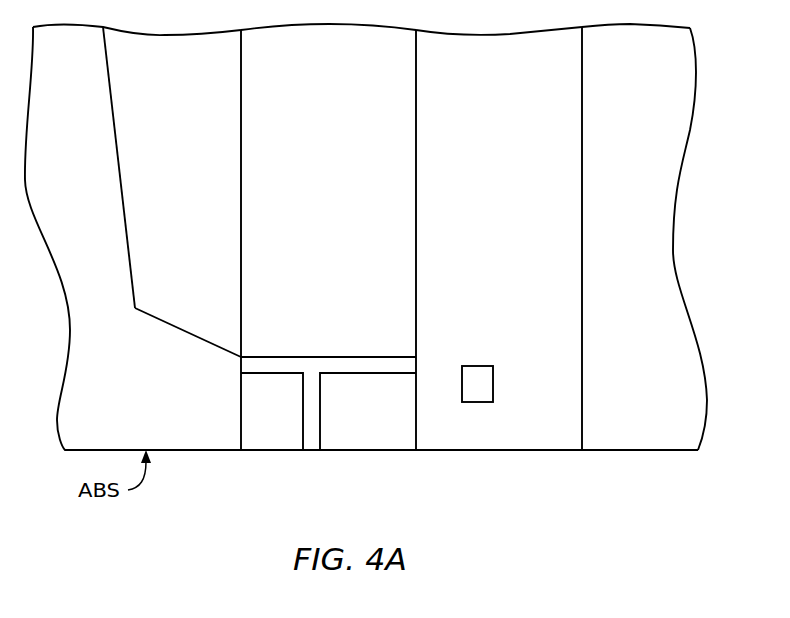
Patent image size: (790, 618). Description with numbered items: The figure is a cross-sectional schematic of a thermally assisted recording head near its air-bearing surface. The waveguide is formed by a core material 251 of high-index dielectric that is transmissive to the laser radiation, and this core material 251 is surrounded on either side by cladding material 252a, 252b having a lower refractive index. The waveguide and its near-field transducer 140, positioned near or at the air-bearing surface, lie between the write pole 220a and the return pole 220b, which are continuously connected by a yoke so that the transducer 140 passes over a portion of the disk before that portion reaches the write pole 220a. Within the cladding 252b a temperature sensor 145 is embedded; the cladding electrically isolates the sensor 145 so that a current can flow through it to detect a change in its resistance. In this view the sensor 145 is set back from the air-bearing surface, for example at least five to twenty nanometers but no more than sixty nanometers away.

The cladding material 252a is at (132, 93).
The core material 251 is at (347, 93).
The cladding material 252b is at (478, 93).
The write pole 220a is at (132, 402).
The return pole 220b is at (623, 402).
The near-field transducer 140 is at (416, 456).
The temperature sensor 145 is at (494, 375).